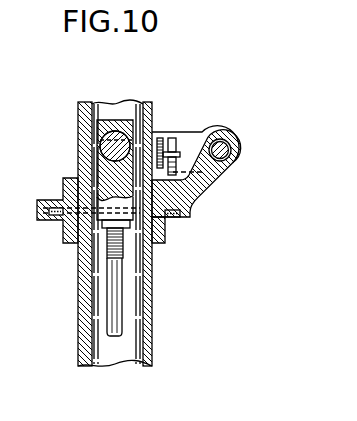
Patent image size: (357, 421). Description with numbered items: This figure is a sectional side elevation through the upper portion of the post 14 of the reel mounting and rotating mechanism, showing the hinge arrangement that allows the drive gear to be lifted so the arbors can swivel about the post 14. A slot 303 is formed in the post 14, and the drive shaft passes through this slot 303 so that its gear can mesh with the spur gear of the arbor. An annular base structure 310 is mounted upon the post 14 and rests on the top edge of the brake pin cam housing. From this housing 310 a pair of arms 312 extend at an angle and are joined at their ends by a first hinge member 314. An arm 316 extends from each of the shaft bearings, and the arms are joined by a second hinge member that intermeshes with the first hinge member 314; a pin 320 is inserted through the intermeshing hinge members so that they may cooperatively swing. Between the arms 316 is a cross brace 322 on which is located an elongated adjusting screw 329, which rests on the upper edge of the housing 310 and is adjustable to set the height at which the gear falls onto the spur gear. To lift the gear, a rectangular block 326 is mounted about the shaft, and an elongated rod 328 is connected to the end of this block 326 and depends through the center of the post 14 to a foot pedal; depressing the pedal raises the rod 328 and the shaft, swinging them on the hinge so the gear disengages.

The post 14 is at (150, 299).
The slot 303 is at (79, 139).
The annular base structure 310 is at (162, 235).
The arms 312 is at (204, 193).
The first hinge member 314 is at (232, 168).
The arm 316 is at (195, 136).
The pivot ball 320 is at (222, 155).
The cross brace 322 is at (160, 136).
The rectangular block 326 is at (118, 130).
The elongated rod 328 is at (120, 318).
The stepped pin 329 is at (172, 138).